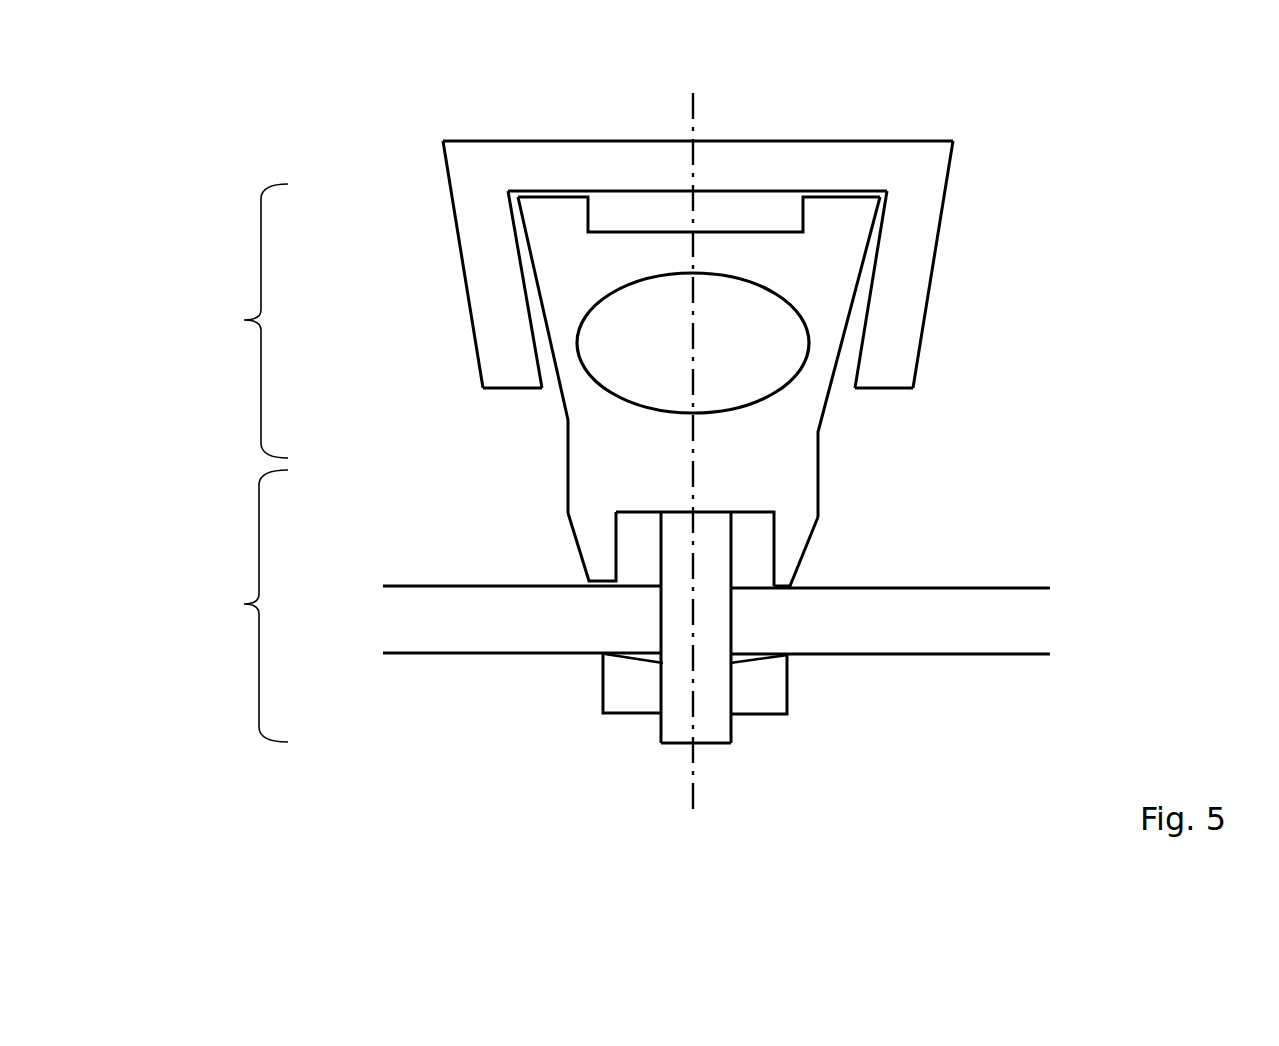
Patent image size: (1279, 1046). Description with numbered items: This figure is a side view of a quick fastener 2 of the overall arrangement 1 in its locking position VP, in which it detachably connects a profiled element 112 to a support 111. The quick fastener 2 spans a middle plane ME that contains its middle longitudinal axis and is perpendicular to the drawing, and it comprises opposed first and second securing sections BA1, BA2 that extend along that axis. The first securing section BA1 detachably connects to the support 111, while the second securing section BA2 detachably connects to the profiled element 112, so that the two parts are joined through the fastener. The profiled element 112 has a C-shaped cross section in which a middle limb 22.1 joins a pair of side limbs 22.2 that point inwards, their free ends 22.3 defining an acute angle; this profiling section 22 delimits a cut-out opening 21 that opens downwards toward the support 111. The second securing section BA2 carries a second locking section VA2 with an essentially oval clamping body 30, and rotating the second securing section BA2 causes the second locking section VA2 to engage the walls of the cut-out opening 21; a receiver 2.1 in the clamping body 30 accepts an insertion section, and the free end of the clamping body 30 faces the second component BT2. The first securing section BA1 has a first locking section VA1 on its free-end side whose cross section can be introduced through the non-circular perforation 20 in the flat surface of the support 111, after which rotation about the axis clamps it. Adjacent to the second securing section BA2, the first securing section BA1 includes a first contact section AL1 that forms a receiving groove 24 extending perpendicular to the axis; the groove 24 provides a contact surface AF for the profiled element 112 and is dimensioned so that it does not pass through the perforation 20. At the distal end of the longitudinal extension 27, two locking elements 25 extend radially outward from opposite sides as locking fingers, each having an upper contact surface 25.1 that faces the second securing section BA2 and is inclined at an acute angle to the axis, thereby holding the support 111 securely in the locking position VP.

The fastening arrangement 1 is at (274, 136).
The quick fastener 2 is at (773, 480).
The receiver 2.1 is at (662, 357).
The perforation 20 is at (648, 622).
The cut-out opening 21 is at (551, 392).
The profiling section 22 is at (409, 231).
The middle limb 22.1 is at (643, 173).
The side limbs 22.2 is at (487, 290).
The free ends 22.3 is at (490, 409).
The receiving groove 24 is at (745, 560).
The locking element 25 is at (613, 684).
The contact surface 25.1 is at (806, 657).
The longitudinal extension 27 is at (722, 735).
The clamping body 30 is at (847, 275).
The support 111 is at (432, 632).
The profiled element 112 is at (920, 203).
The second component BT2 is at (978, 156).
The first securing section BA1 is at (244, 604).
The second securing section BA2 is at (244, 320).
The first locking section VA1 is at (605, 743).
The second locking section VA2 is at (452, 334).
The first contact section AL1 is at (561, 553).
The contact surface AF is at (802, 576).
The locking position VP is at (1118, 345).
The middle plane ME is at (692, 431).